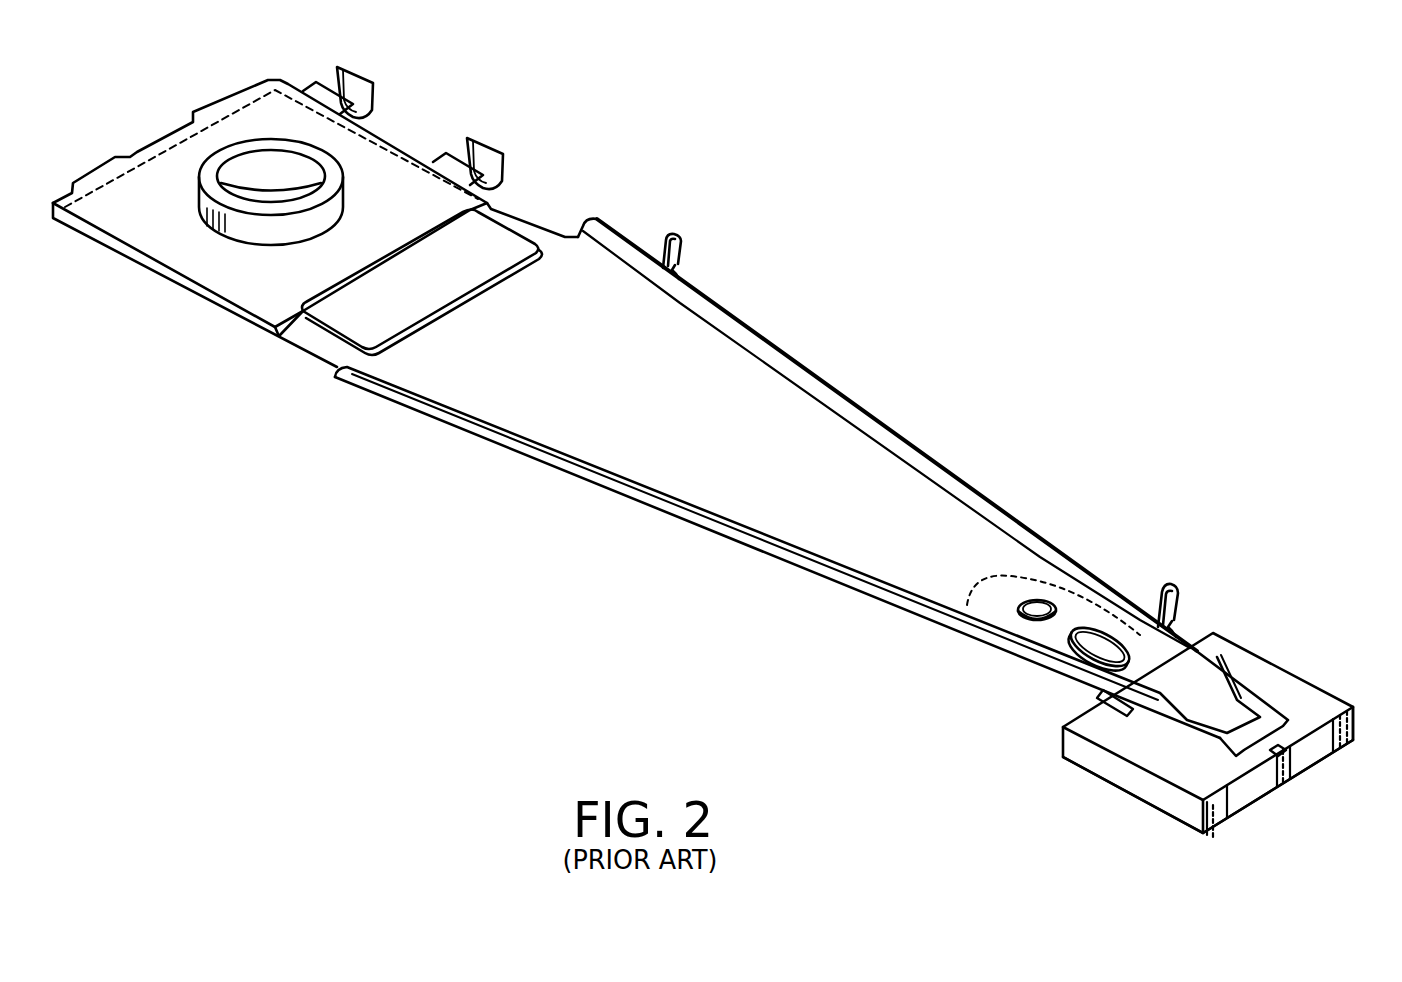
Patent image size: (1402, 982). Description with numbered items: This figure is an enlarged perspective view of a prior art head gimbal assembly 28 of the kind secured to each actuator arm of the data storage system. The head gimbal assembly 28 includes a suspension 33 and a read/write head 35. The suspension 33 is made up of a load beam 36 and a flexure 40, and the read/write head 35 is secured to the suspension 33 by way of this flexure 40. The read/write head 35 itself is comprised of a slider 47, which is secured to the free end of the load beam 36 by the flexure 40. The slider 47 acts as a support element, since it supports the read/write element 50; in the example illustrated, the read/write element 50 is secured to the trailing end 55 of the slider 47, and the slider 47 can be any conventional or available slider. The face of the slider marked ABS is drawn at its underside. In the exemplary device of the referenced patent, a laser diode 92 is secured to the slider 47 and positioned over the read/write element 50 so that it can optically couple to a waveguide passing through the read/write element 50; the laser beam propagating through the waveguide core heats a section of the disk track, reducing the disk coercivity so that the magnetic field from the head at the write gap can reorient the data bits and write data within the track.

The head gimbal assembly 28 is at (846, 153).
The load beam 36 is at (811, 487).
The suspension 33 is at (1041, 512).
The read/write head 35 is at (1229, 715).
The flexure 40 is at (1098, 697).
The slider 47 is at (1278, 667).
The laser diode 92 is at (1310, 727).
The read/write element 50 is at (1353, 727).
The trailing end 55 is at (1367, 740).
The air bearing surface ABS is at (1233, 823).